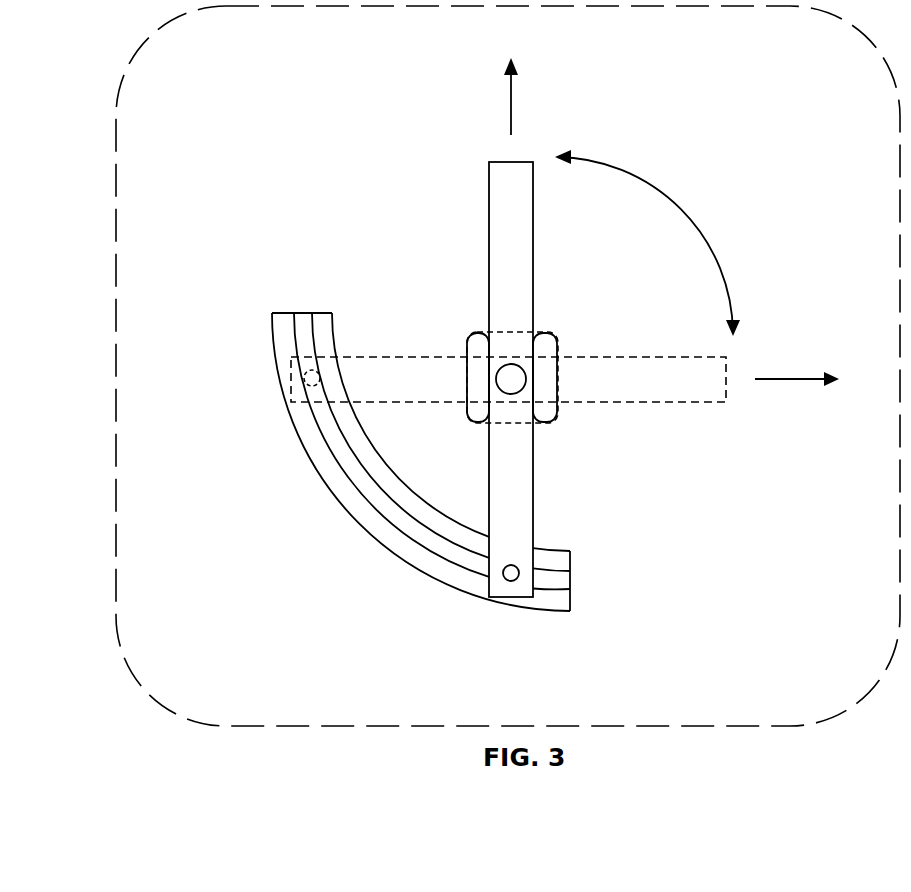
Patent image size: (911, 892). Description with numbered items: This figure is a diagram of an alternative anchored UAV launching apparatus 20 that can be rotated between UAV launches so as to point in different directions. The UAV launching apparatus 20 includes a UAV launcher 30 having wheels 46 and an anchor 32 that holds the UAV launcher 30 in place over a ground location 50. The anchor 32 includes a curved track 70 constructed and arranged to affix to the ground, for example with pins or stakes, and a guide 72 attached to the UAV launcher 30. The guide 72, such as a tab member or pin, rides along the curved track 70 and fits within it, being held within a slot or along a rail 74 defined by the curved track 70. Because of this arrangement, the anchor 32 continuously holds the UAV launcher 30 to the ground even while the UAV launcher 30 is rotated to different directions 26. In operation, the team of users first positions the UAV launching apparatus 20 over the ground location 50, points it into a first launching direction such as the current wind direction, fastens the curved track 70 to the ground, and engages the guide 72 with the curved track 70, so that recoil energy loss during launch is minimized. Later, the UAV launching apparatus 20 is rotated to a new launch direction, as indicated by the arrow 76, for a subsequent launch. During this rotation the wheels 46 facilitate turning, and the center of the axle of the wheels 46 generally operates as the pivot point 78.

The UAV launching apparatus 20 is at (264, 102).
The direction 26 is at (785, 340).
The UAV launcher 30 is at (435, 171).
The anchor 32 is at (399, 429).
The wheels 46 is at (451, 317).
The ground location 50 is at (117, 476).
The curved track 70 is at (276, 330).
The guide 72 is at (305, 378).
The rail 74 is at (362, 476).
The arrow 76 is at (653, 187).
The pivot point 78 is at (511, 380).